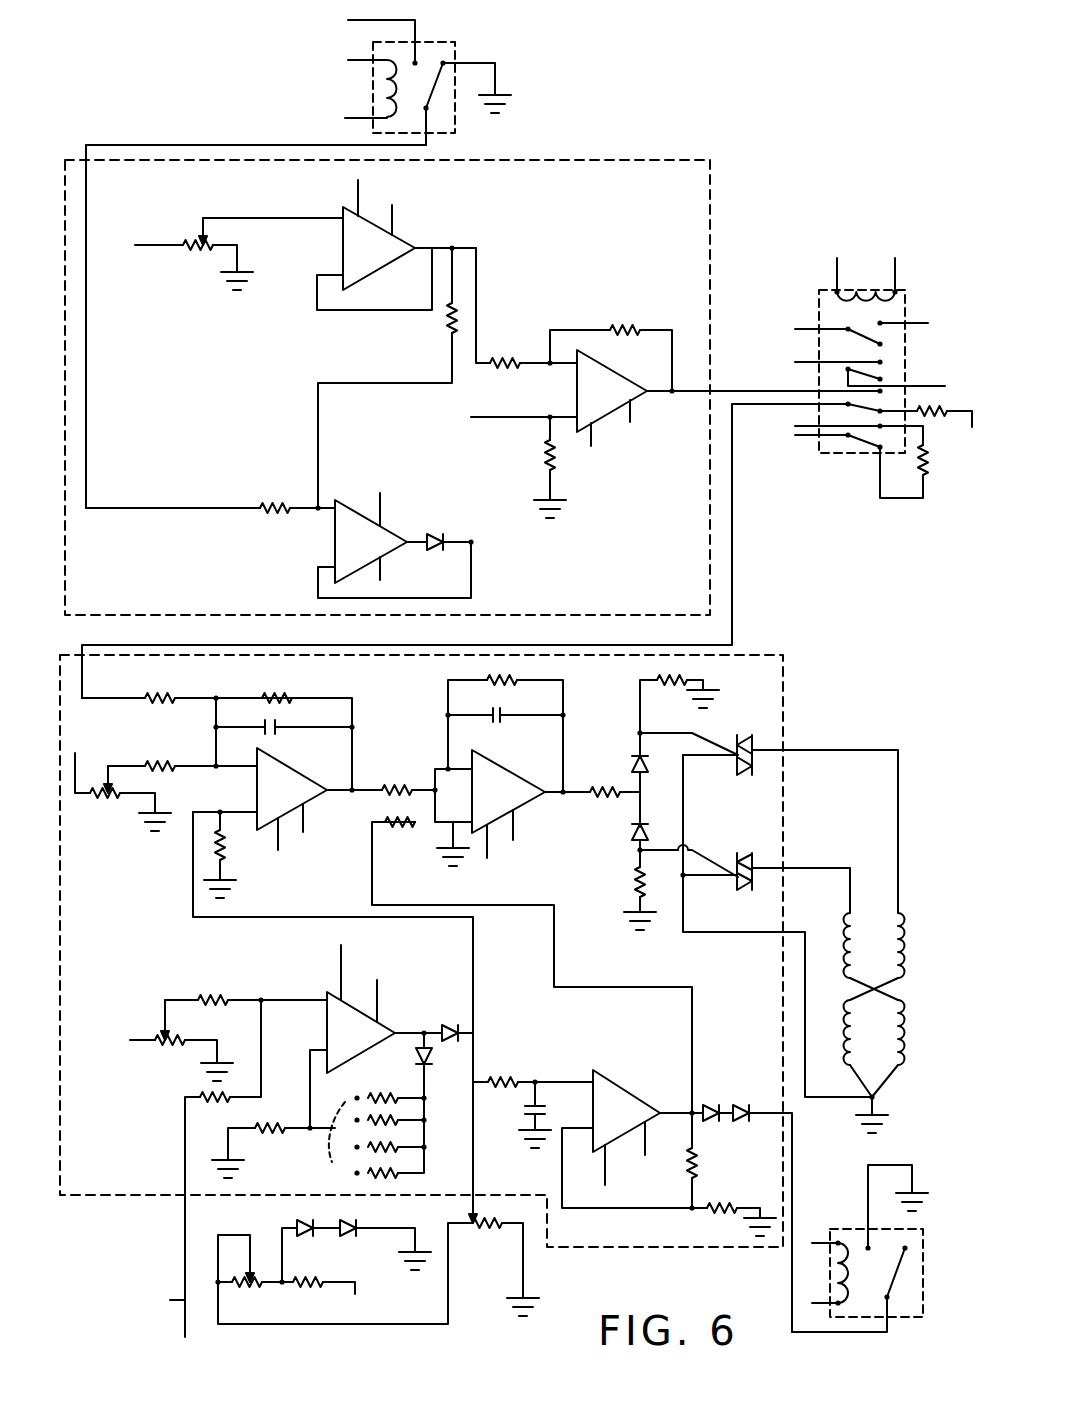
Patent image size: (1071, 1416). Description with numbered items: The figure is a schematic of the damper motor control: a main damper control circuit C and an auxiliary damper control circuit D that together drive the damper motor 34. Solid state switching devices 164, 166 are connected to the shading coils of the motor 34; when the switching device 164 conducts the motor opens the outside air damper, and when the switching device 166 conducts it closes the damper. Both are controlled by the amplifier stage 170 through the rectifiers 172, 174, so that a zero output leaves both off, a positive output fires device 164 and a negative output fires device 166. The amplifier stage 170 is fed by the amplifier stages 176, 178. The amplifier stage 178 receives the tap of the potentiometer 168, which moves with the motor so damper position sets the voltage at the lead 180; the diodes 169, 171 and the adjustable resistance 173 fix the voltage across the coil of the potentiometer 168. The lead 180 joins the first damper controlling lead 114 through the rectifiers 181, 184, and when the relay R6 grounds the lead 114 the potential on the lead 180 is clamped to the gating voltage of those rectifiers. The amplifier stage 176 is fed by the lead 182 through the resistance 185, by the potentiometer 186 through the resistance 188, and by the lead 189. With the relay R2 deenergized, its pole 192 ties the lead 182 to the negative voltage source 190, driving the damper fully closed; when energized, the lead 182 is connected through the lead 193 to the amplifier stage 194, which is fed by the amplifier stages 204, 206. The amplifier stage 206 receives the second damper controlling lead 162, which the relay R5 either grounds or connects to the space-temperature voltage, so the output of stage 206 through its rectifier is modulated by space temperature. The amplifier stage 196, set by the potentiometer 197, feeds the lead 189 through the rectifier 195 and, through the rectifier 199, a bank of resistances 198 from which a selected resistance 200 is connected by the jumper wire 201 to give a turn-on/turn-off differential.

The second damper controlling lead 162 is at (230, 145).
The relay R5 is at (298, 259).
The relay R2 is at (822, 291).
The relay R6 is at (898, 1320).
The auxiliary damper control circuit D is at (556, 616).
The main damper control circuit C is at (127, 1200).
The amplifier stage 204 is at (376, 268).
The amplifier stage 206 is at (345, 500).
The amplifier stage 194 is at (590, 360).
The lead 193 is at (790, 391).
The pole 192 is at (846, 405).
The source of negative voltage 190 is at (960, 411).
The lead 182 is at (402, 656).
The resistance 185 is at (160, 696).
The resistance 188 is at (150, 760).
The potentiometer 186 is at (108, 797).
The amplifier stage 176 is at (270, 762).
The lead 189 is at (332, 916).
The amplifier stage 170 is at (488, 758).
The rectifier 172 is at (630, 768).
The rectifier 174 is at (632, 834).
The solid state switching device 164 is at (758, 772).
The solid state switching device 166 is at (735, 885).
The damper motor 34 is at (945, 1009).
The lead 180 is at (692, 1010).
The amplifier stage 178 is at (645, 1098).
The rectifier 181 is at (705, 1122).
The rectifier 184 is at (750, 1100).
The amplifier stage 196 is at (354, 1050).
The potentiometer 197 is at (178, 1046).
The rectifier 195 is at (455, 1043).
The rectifier 199 is at (428, 1058).
The resistance 200 is at (386, 1097).
The bank of resistances 198 is at (470, 1136).
The jumper wire 201 is at (333, 1160).
The potentiometer 168 is at (470, 1232).
The adjustable resistance 173 is at (240, 1286).
The diode 169 is at (297, 1224).
The diode 171 is at (345, 1235).
The first damper controlling lead 114 is at (795, 1334).